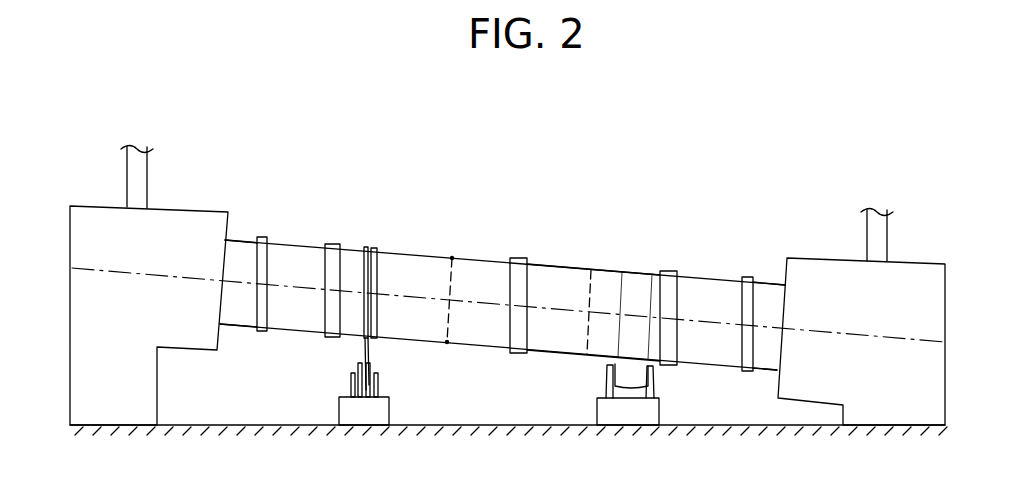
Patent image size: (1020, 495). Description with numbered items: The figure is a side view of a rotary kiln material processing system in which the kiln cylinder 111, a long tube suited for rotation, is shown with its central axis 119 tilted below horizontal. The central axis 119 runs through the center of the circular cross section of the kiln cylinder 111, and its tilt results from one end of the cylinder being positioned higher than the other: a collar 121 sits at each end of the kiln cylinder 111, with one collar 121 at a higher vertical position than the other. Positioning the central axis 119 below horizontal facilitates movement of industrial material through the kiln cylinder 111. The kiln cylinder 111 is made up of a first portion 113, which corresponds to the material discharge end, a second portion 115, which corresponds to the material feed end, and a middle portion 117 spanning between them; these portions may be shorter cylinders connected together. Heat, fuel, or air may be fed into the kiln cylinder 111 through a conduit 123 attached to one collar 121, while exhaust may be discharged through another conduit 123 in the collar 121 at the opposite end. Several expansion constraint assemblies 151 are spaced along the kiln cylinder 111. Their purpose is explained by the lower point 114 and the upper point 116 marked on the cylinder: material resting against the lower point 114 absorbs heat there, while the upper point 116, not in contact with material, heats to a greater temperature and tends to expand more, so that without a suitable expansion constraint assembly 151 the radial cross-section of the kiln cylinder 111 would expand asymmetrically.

The kiln cylinder 111 is at (580, 205).
The first portion 113 is at (766, 371).
The lower point 114 is at (441, 350).
The second portion 115 is at (240, 241).
The upper point 116 is at (452, 258).
The middle portion 117 is at (546, 351).
The central axis 119 is at (908, 340).
The collar 121 is at (101, 206).
The conduit 123 is at (148, 182).
The expansion constraint assembly 151 is at (336, 245).